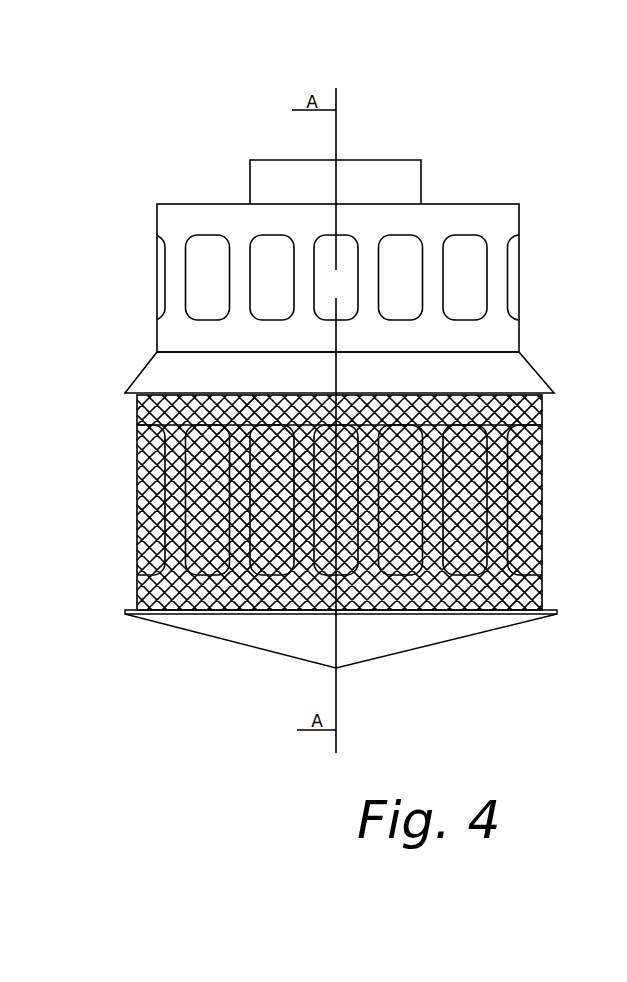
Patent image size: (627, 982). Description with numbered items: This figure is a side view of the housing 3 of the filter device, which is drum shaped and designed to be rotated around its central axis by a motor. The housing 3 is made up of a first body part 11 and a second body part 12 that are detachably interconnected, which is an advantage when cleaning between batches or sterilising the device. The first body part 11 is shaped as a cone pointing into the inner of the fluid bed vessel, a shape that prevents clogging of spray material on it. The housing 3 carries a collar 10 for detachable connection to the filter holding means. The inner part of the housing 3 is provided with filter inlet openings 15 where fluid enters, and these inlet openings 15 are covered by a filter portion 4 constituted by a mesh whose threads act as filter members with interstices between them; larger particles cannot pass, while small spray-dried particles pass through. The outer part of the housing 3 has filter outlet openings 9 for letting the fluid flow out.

The housing 3 is at (500, 165).
The filter outlet openings 9 is at (170, 237).
The second body part 12 is at (513, 342).
The collar 10 is at (162, 375).
The filter inlet openings 15 is at (139, 417).
The filter portion 4 is at (543, 413).
The first body part 11 is at (412, 635).